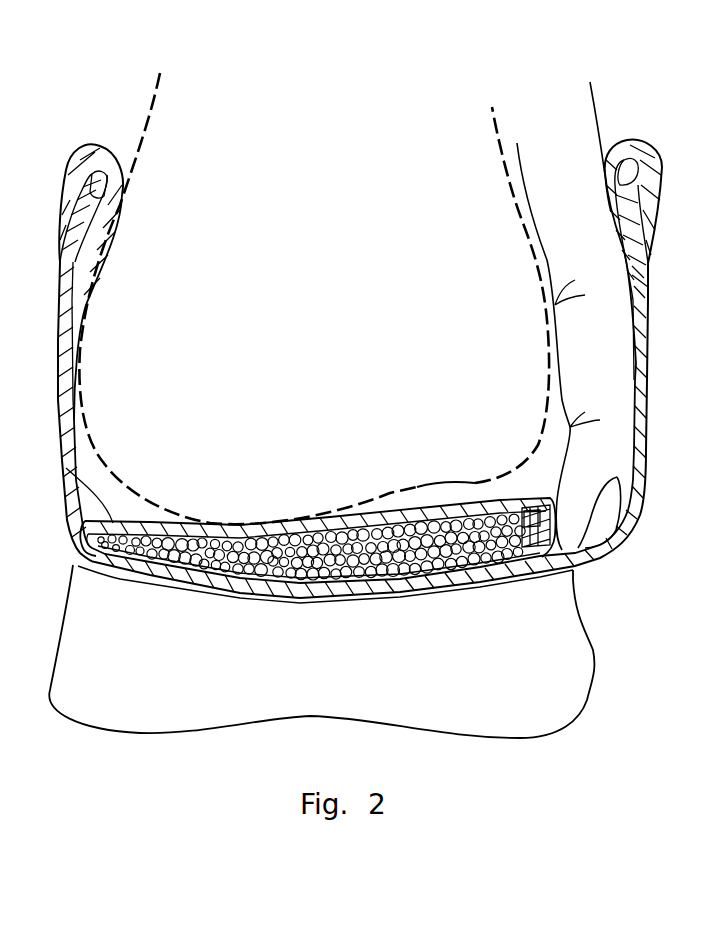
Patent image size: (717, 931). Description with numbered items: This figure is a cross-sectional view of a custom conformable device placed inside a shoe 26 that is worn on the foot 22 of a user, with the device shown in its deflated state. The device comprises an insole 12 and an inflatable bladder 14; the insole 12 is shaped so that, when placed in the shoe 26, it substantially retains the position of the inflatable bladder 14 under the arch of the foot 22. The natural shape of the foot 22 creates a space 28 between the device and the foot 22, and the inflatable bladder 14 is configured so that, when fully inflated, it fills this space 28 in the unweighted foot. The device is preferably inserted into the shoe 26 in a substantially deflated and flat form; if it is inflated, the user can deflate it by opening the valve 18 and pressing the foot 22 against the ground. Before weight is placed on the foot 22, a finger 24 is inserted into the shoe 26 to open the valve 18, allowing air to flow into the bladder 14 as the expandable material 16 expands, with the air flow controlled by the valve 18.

The insole 12 is at (70, 472).
The inflatable bladder 14 is at (82, 547).
The expandable material 16 is at (283, 553).
The valve 18 is at (558, 552).
The foot 22 is at (147, 122).
The finger 24 is at (587, 135).
The shoe 26 is at (62, 290).
The space 28 is at (425, 486).